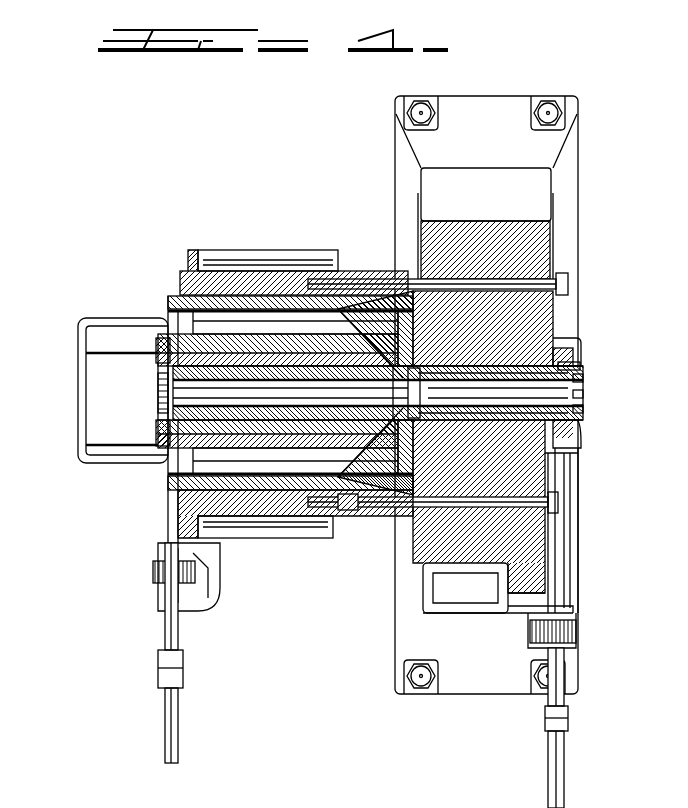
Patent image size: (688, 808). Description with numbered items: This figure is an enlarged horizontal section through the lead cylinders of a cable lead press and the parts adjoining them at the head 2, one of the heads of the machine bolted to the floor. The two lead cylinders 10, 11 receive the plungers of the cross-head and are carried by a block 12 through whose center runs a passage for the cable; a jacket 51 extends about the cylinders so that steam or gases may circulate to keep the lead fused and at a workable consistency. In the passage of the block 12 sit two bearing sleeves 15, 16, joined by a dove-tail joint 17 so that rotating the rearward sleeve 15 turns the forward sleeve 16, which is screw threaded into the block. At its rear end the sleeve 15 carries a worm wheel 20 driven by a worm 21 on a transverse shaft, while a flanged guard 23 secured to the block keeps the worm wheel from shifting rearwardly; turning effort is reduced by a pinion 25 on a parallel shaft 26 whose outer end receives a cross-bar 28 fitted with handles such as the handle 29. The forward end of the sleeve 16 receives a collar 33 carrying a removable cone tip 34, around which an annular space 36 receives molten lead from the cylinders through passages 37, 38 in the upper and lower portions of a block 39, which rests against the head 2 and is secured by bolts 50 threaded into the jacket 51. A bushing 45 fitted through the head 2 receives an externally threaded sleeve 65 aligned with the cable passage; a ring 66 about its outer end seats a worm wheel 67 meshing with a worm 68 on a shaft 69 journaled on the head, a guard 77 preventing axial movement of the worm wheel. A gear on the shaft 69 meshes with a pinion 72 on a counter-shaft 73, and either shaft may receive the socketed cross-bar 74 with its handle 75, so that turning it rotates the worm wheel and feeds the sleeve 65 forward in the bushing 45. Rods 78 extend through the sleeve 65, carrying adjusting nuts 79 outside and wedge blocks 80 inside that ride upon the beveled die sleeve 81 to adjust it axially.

The head 2 is at (520, 190).
The lead cylinder 10 is at (175, 305).
The lead cylinder 11 is at (178, 465).
The block 12 is at (263, 498).
The bearing sleeve 15 is at (150, 425).
The bearing sleeve 16 is at (290, 385).
The dove-tail joint 17 is at (245, 375).
The worm wheel 20 is at (160, 440).
The worm 21 is at (150, 398).
The flanged guard 23 is at (150, 347).
The pinion 25 is at (145, 565).
The shaft 26 is at (158, 615).
The cross-bar 28 is at (152, 660).
The handle 29 is at (158, 710).
The collar 33 is at (350, 390).
The cone tip 34 is at (360, 440).
The annular space 36 is at (382, 335).
The passage 37 is at (345, 295).
The passage 38 is at (340, 502).
The block 39 is at (332, 500).
The bushing 45 is at (558, 445).
The bolt 50 is at (555, 270).
The jacket 51 is at (215, 250).
The sleeve 65 is at (488, 393).
The ring 66 is at (573, 358).
The worm wheel 67 is at (568, 343).
The worm 68 is at (577, 388).
The shaft 69 is at (555, 555).
The pinion 72 is at (572, 622).
The counter-shaft 73 is at (558, 663).
The cross-bar 74 is at (560, 705).
The handle 75 is at (556, 770).
The guard 77 is at (562, 330).
The rod 78 is at (577, 370).
The adjusting nut 79 is at (577, 405).
The wedge block 80 is at (498, 386).
The die sleeve 81 is at (493, 393).